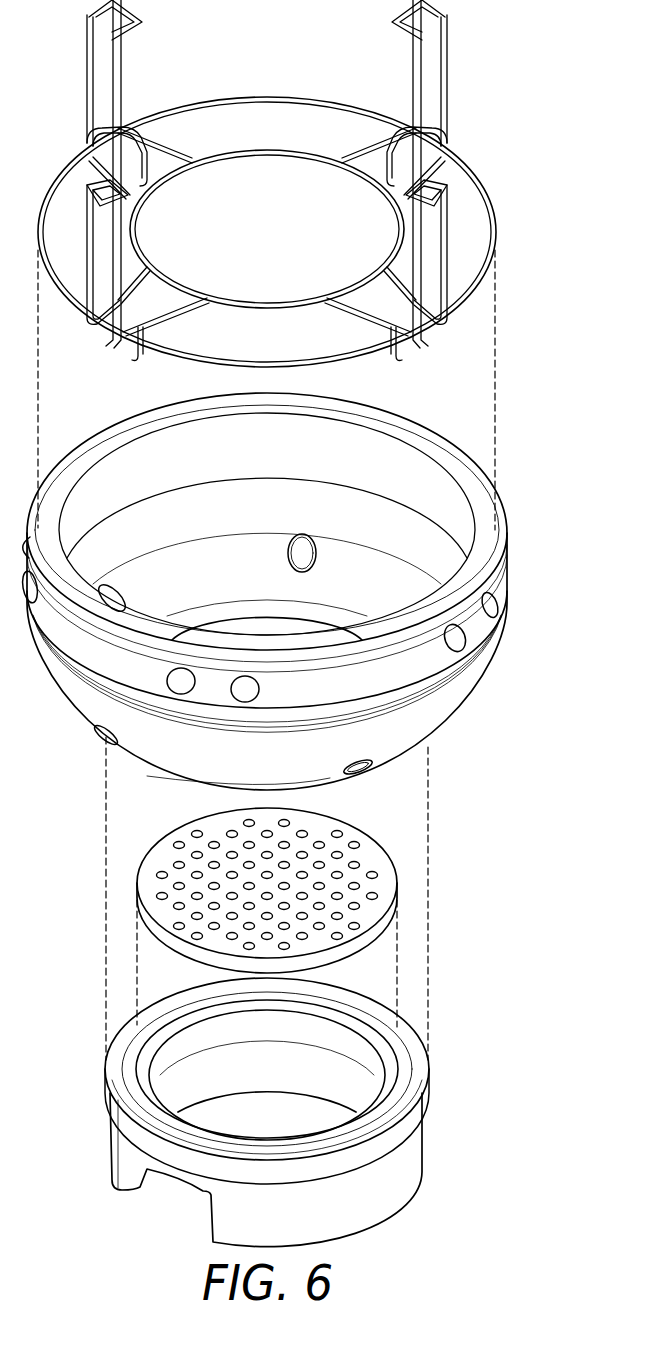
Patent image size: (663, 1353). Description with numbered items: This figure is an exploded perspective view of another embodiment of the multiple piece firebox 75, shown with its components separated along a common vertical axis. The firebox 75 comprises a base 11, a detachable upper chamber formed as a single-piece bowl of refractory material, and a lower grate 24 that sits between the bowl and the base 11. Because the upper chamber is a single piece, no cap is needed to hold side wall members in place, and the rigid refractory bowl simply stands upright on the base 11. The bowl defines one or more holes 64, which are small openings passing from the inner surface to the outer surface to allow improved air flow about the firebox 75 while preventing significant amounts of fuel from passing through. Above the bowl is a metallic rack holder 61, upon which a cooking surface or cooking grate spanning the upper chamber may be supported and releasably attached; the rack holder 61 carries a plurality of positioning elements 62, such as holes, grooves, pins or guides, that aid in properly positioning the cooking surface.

The base 11 is at (110, 1140).
The lower grate 24 is at (158, 863).
The rack holder 61 is at (490, 197).
The positioning elements 62 is at (122, 78).
The holes 64 is at (108, 588).
The multiple piece firebox 75 is at (453, 705).